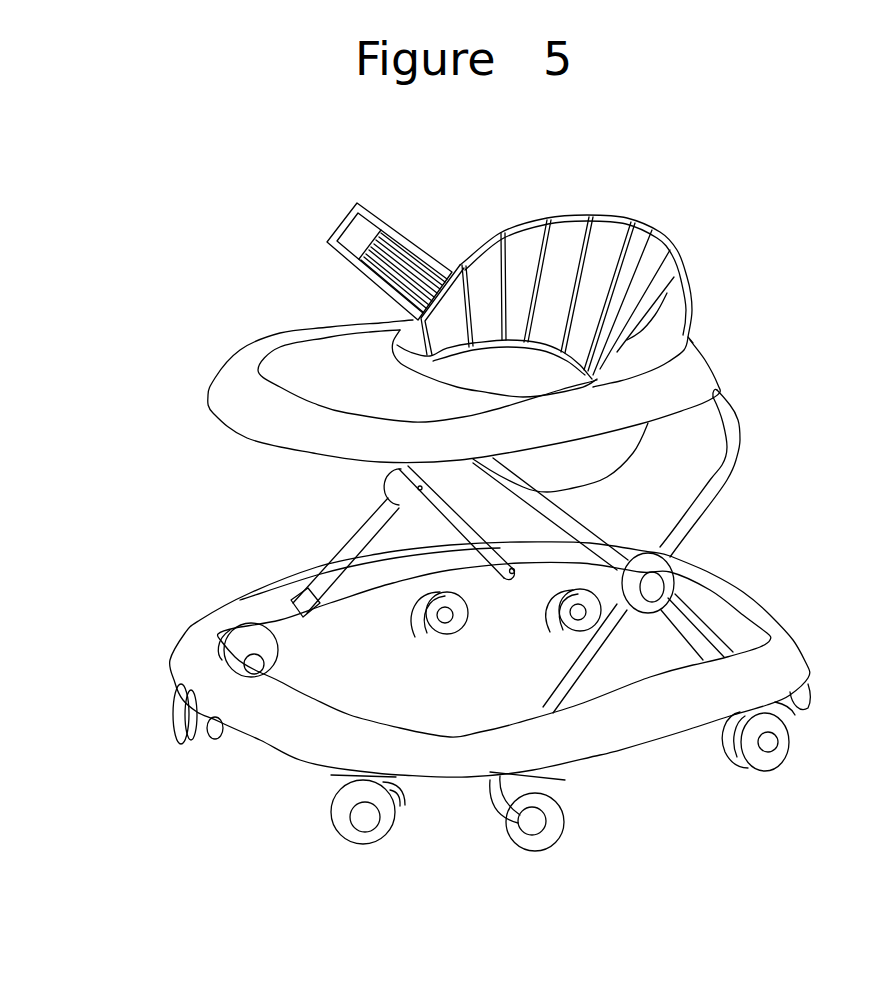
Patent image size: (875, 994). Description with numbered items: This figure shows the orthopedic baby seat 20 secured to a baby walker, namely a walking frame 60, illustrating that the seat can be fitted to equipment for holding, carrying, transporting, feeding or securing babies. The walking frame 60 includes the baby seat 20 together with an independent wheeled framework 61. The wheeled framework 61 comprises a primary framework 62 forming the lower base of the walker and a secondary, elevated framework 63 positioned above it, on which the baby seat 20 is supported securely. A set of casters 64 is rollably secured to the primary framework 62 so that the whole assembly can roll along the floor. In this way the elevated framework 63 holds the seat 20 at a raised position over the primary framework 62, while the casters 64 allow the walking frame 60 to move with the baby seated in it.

The baby seat 20 is at (598, 215).
The walking frame 60 is at (757, 360).
The independent wheeled framework 61 is at (237, 537).
The primary framework 62 is at (297, 737).
The secondary elevated framework 63 is at (237, 393).
The set of casters 64 is at (513, 840).